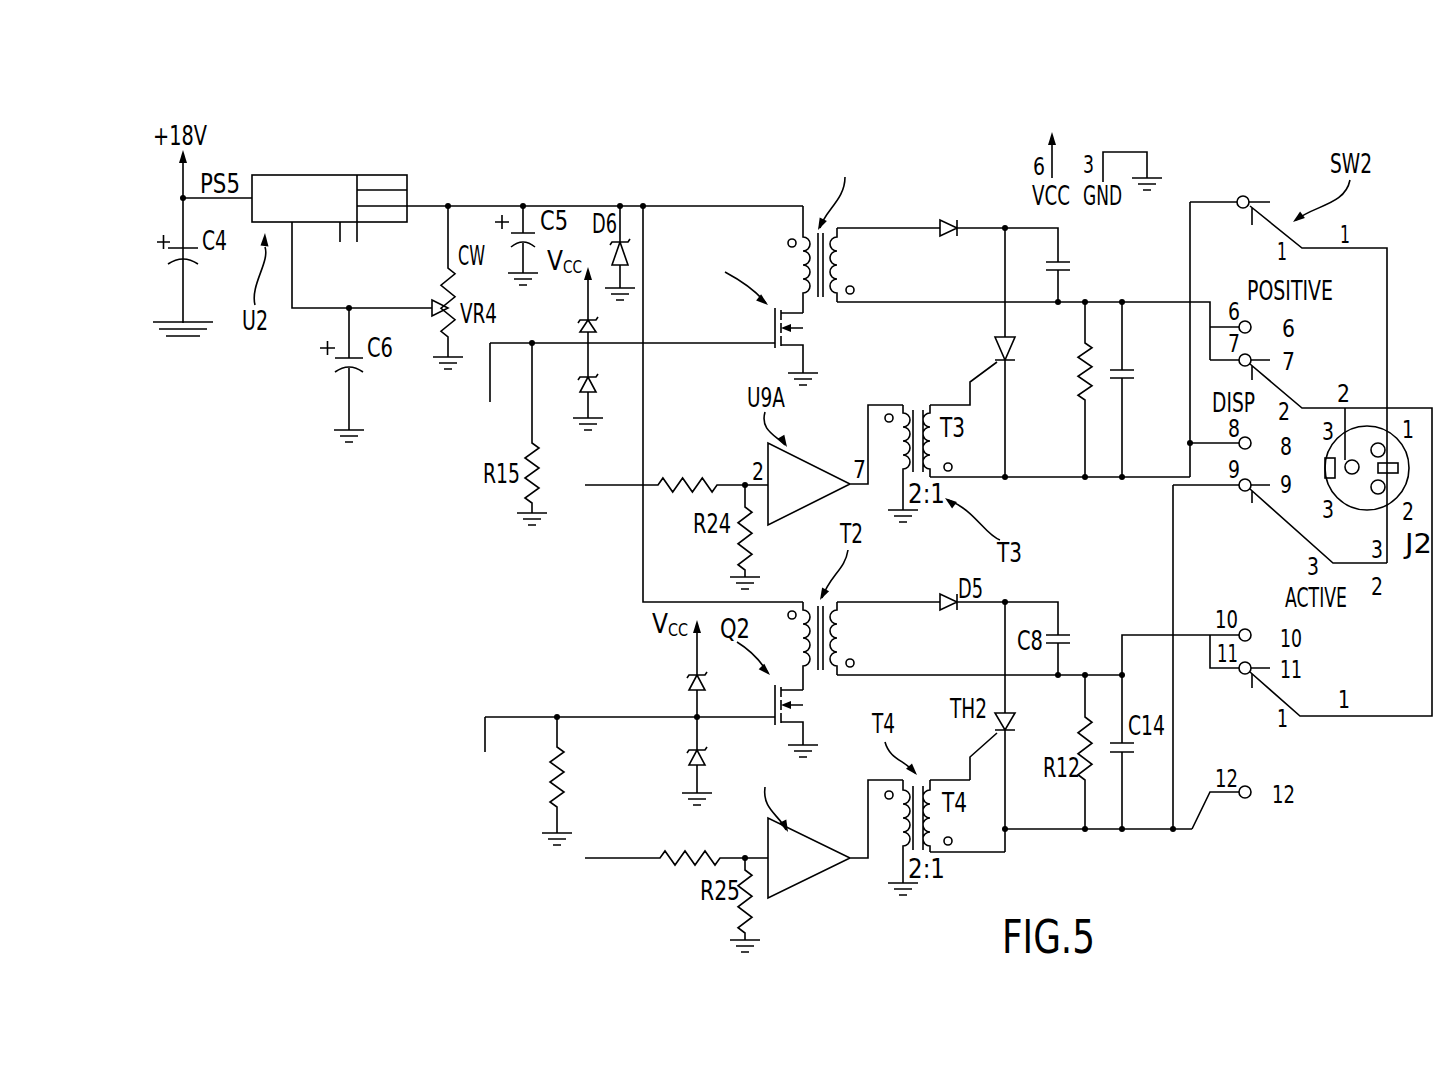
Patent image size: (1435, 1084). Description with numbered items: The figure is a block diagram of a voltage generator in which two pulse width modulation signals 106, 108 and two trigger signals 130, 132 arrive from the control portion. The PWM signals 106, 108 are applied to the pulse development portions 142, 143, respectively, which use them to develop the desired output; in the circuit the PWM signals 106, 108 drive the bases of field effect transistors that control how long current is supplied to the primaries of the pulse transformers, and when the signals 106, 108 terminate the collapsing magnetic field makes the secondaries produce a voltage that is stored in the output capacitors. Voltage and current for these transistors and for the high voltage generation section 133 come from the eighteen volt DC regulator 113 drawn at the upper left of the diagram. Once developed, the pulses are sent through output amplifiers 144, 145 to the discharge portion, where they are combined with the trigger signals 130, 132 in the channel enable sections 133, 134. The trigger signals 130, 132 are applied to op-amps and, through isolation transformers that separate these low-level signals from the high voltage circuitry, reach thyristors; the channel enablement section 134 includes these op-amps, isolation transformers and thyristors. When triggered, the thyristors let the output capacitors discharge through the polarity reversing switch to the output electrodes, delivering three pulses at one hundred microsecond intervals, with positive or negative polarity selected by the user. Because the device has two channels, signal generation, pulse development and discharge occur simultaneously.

The pulse width modulation signal 106 is at (490, 395).
The pulse width modulation signal 108 is at (484, 734).
The 18V DC regulator 113 is at (455, 165).
The trigger signal 130 is at (628, 488).
The trigger signal 132 is at (640, 862).
The channel enable section 133 is at (975, 180).
The channel enable section 134 is at (1055, 838).
The pulse development portion 142 is at (608, 185).
The pulse development portion 143 is at (438, 798).
The output amplifier 144 is at (812, 200).
The output amplifier 145 is at (842, 873).